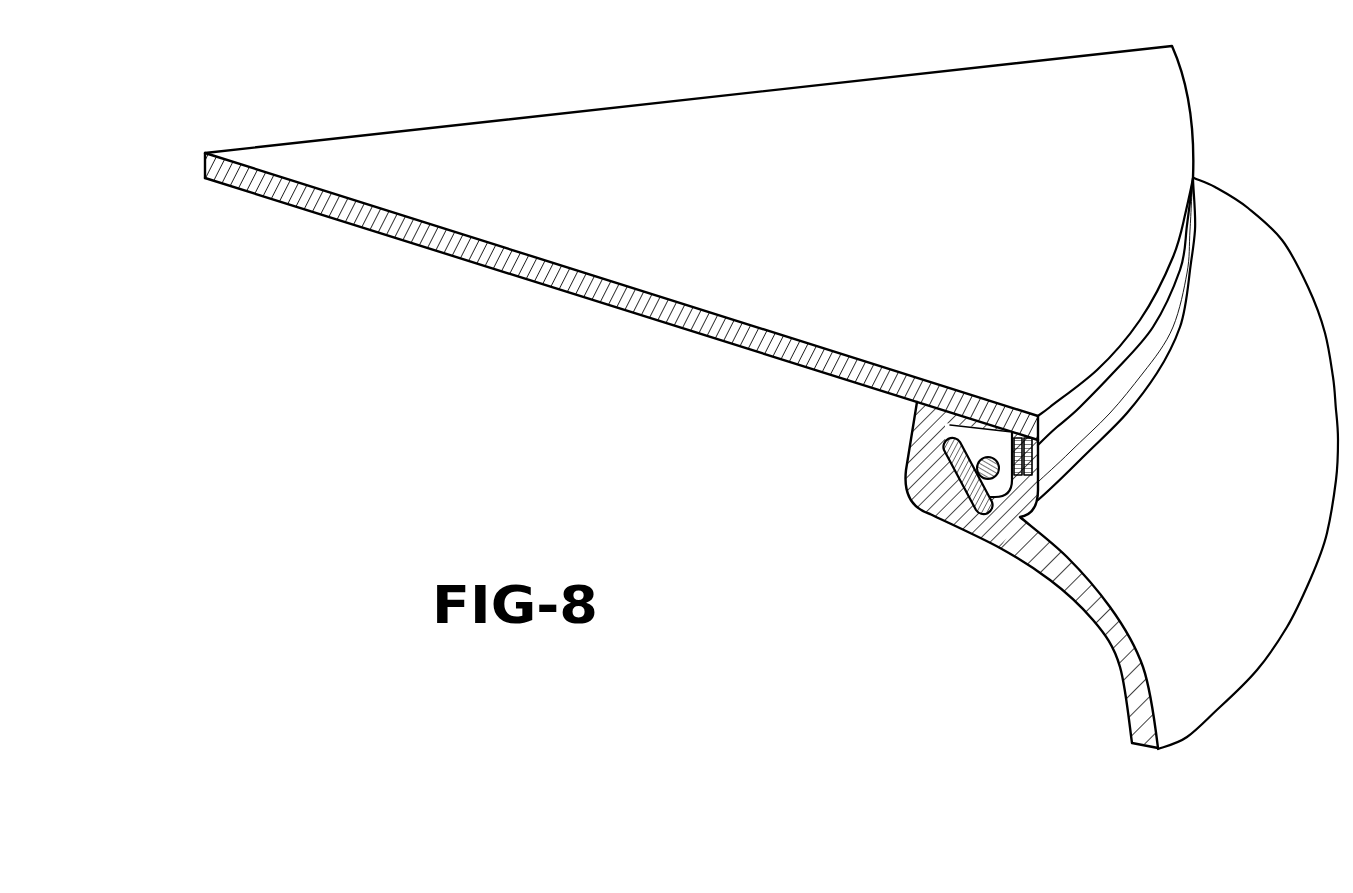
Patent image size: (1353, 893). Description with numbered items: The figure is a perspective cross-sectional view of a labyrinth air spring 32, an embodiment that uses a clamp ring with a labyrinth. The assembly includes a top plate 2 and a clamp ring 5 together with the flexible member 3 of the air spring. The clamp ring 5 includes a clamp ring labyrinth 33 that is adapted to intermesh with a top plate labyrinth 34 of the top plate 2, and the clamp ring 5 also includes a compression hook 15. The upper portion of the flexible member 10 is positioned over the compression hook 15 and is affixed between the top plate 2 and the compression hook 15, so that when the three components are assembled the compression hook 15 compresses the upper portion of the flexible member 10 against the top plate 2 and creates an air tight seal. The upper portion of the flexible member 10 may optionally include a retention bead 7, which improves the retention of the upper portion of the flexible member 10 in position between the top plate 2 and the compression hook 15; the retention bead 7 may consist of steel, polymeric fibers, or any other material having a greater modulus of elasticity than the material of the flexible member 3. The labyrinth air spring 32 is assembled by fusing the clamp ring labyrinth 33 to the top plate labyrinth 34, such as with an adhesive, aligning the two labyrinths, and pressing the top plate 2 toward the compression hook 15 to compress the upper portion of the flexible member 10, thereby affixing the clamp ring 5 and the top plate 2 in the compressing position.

The top plate 2 is at (752, 340).
The flexible member 3 is at (1105, 632).
The clamp ring 5 is at (990, 508).
The retention bead 7 is at (972, 478).
The upper portion of the flexible member 10 is at (963, 428).
The compression hook 15 is at (948, 458).
The labyrinth air spring 32 is at (676, 445).
The clamp ring labyrinth 33 is at (1033, 458).
The top plate labyrinth 34 is at (1035, 428).